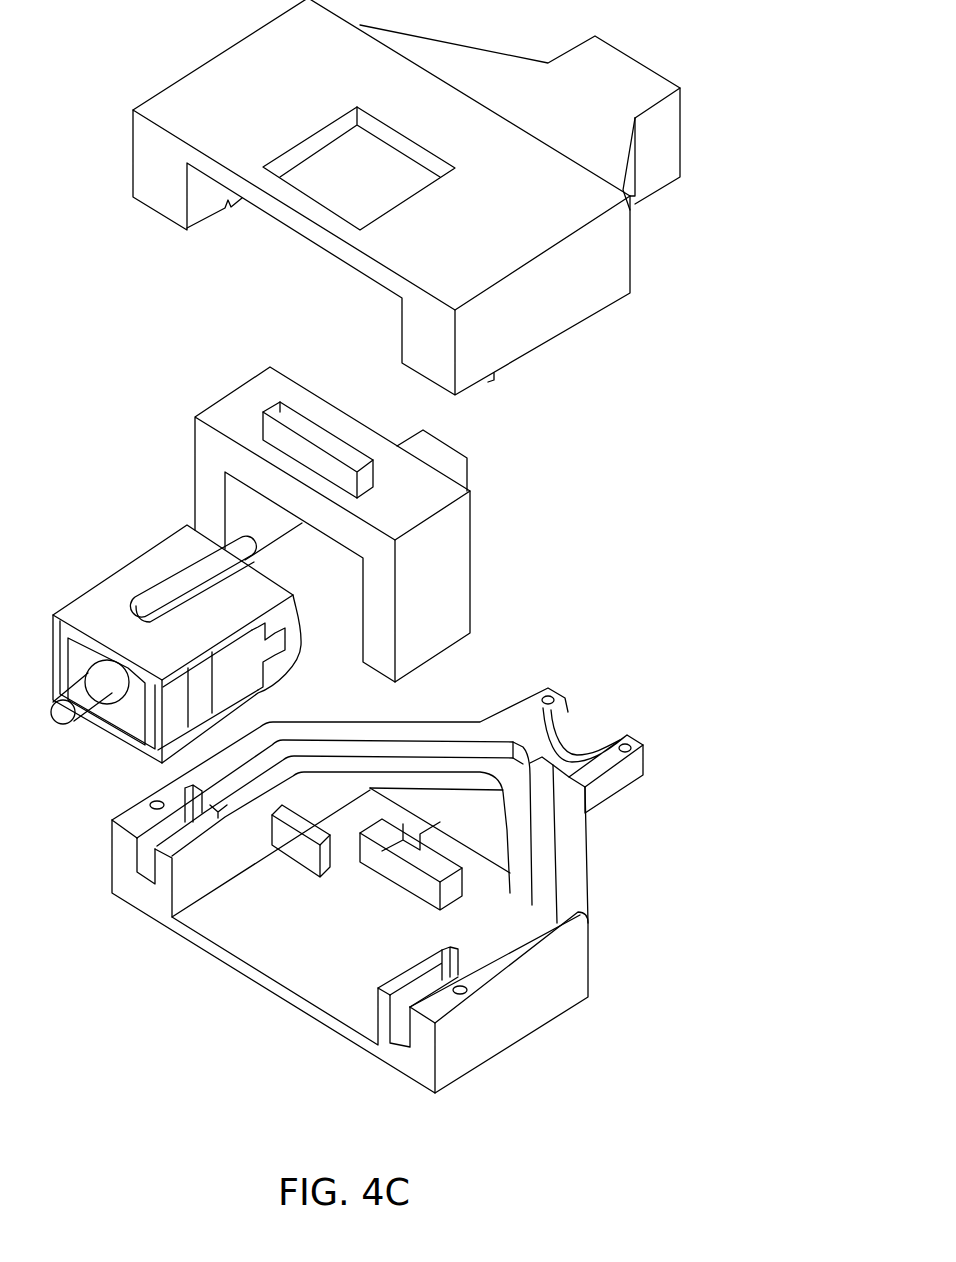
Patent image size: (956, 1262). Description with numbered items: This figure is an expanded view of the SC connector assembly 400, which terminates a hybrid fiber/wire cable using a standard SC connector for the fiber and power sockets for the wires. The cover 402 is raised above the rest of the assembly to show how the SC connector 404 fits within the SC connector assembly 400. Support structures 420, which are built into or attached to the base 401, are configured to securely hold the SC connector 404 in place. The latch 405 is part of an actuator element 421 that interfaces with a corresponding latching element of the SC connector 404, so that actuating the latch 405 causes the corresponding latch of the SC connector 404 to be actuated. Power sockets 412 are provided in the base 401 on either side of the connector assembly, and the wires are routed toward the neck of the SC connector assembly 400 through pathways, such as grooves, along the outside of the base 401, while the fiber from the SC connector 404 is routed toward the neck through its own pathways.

The SC connector assembly 400 is at (216, 992).
The base 401 is at (532, 1013).
The cover 402 is at (215, 85).
The SC connector 404 is at (142, 573).
The latch 405 is at (280, 402).
The power sockets 412 is at (143, 853).
The support structures 420 is at (292, 848).
The actuator element 421 is at (223, 415).